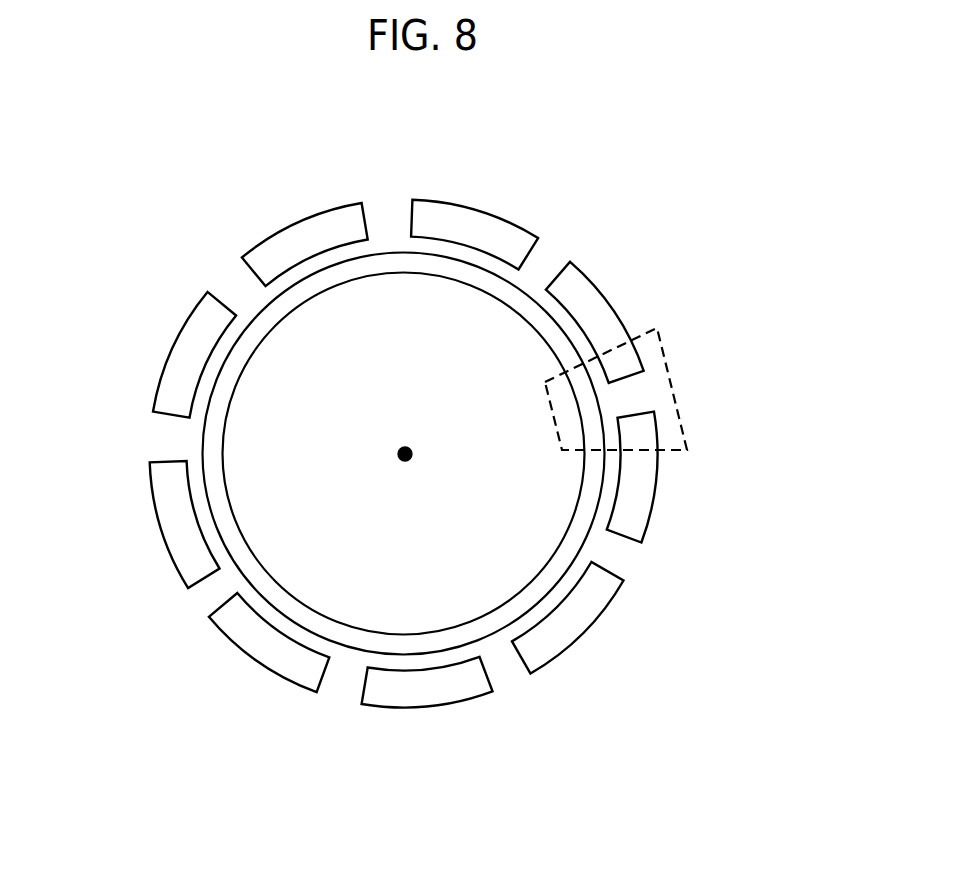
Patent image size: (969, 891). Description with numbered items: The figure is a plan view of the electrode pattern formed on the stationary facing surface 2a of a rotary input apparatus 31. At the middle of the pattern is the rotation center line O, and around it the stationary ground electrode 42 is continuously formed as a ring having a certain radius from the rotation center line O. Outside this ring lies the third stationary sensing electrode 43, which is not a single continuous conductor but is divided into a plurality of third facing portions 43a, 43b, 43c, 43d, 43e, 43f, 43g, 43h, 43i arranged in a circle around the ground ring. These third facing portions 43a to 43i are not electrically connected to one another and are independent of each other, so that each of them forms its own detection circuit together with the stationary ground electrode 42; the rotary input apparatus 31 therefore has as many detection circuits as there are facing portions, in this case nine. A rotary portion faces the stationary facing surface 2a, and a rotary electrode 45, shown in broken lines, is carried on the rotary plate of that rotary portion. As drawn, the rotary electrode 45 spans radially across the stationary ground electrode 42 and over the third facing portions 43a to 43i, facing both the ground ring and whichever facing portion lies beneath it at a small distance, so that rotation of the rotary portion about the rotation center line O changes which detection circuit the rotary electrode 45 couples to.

The rotary input apparatus 31 is at (605, 195).
The stationary facing surface 2a is at (517, 695).
The stationary ground electrode 42 is at (592, 483).
The rotation center line O is at (402, 462).
The third stationary sensing electrode 43 is at (238, 656).
The third facing portion 43a is at (642, 497).
The third facing portion 43b is at (578, 617).
The third facing portion 43c is at (431, 693).
The third facing portion 43d is at (290, 665).
The third facing portion 43e is at (172, 522).
The third facing portion 43f is at (190, 350).
The third facing portion 43g is at (315, 233).
The third facing portion 43h is at (477, 230).
The third facing portion 43i is at (600, 300).
The rotary electrode 45 is at (683, 392).